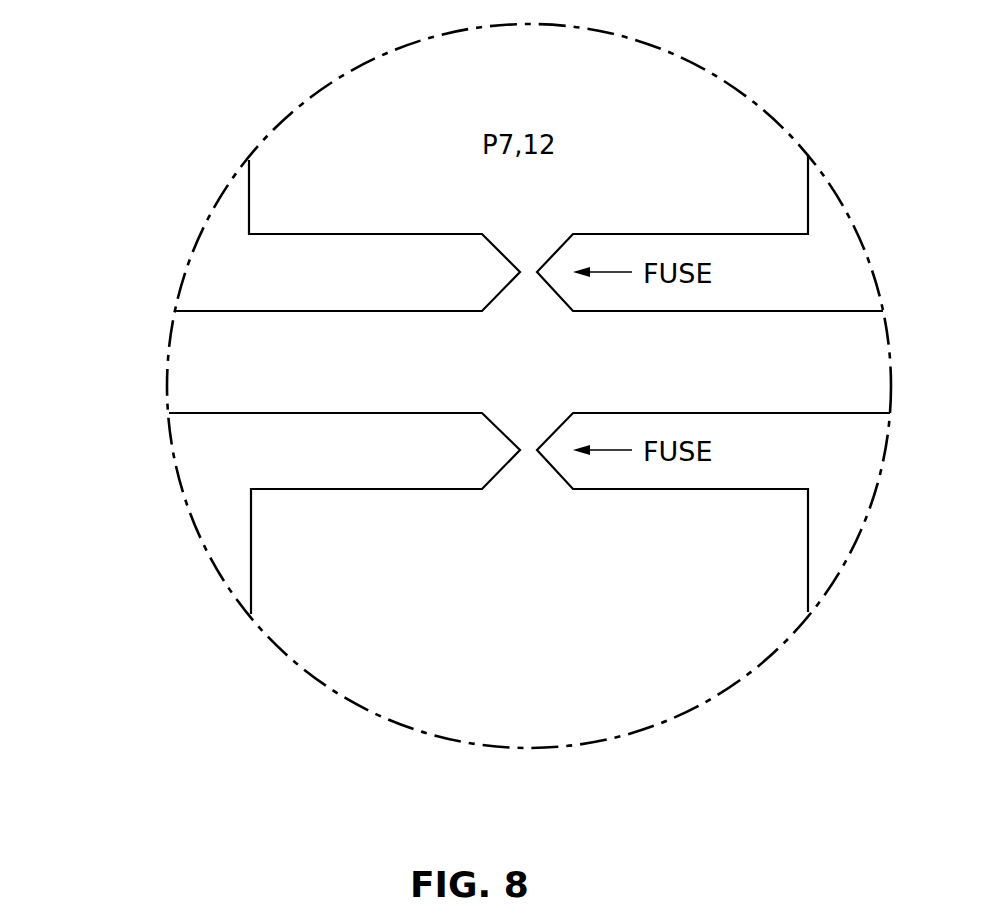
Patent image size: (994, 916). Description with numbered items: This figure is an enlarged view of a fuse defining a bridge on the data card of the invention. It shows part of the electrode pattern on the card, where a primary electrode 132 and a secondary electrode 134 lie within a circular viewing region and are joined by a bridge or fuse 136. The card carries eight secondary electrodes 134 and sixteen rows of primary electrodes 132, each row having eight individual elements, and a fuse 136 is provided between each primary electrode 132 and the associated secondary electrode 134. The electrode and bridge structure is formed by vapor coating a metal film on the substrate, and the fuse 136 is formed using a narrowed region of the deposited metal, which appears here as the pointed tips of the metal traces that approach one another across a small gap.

The primary electrode 132 is at (336, 605).
The secondary electrode 134 is at (230, 368).
The bridge or fuse 136 is at (505, 402).